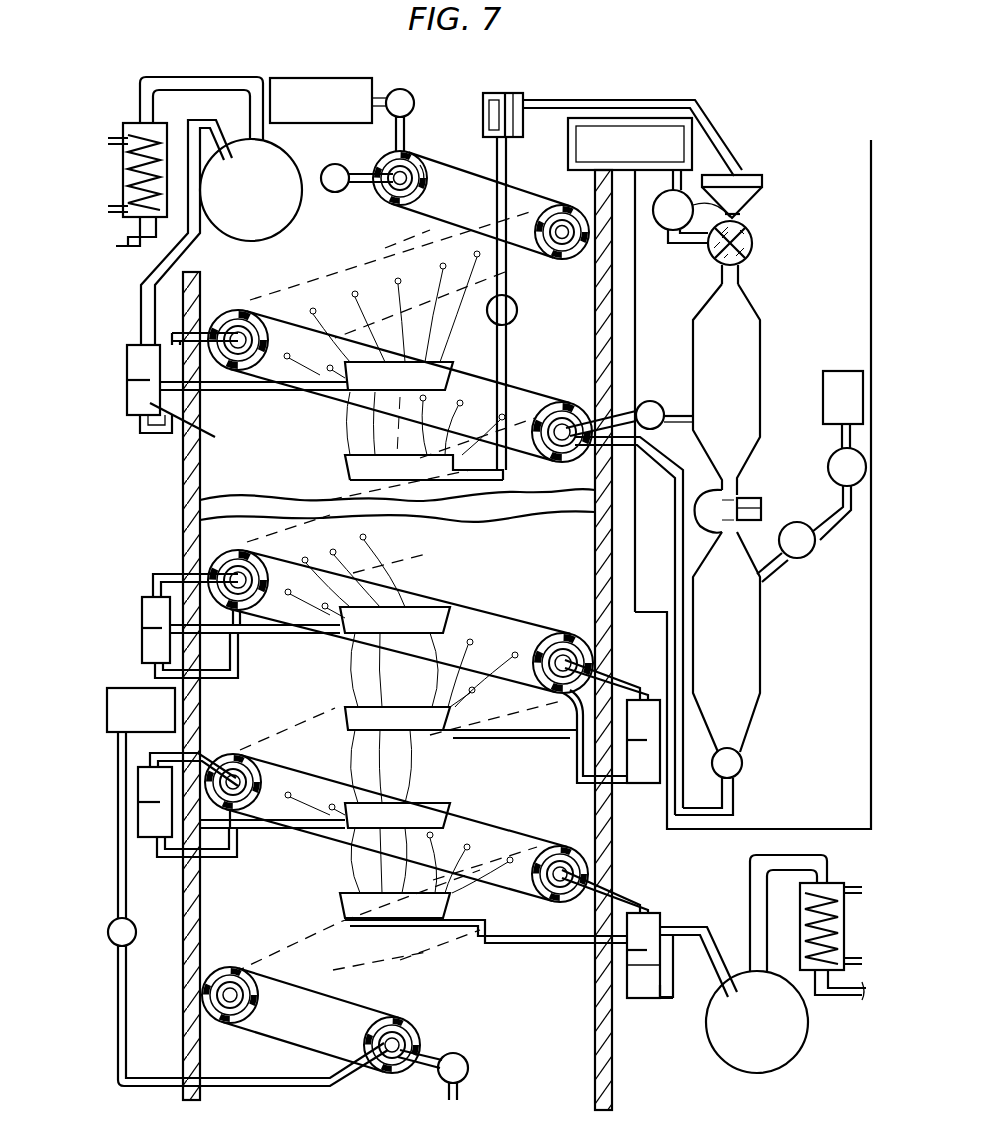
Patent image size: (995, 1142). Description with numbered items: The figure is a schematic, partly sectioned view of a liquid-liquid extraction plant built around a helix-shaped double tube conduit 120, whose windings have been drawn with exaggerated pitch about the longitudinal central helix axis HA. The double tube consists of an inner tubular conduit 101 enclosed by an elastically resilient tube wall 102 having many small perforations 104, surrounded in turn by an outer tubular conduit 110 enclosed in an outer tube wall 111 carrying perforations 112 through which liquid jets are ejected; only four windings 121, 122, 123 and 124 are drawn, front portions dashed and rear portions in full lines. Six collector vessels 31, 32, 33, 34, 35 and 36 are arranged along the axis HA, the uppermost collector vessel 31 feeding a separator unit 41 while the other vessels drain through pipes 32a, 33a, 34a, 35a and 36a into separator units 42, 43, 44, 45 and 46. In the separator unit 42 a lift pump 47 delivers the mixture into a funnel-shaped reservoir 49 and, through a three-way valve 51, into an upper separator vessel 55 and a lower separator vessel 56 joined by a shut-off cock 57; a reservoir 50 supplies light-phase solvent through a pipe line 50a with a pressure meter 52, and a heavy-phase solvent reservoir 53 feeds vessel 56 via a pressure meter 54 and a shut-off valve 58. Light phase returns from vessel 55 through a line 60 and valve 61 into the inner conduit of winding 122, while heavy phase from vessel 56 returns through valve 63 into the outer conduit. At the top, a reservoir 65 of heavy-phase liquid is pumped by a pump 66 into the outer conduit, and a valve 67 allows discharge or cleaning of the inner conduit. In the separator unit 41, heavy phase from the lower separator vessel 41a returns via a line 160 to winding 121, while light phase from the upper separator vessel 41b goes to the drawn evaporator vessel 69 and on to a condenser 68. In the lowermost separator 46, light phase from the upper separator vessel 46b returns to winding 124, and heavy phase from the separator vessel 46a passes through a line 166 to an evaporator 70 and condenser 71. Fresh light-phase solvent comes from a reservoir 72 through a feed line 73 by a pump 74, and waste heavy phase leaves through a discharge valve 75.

The uppermost collector vessel 31 is at (397, 387).
The collector vessel 32 is at (397, 478).
The pipe 32a is at (503, 480).
The collector vessel 33 is at (397, 630).
The pipe 33a is at (275, 640).
The collector vessel 34 is at (397, 730).
The pipe 34a is at (528, 745).
The collector vessel 35 is at (397, 826).
The pipe 35a is at (283, 830).
The lowermost collector vessel 36 is at (397, 917).
The pipe 36a is at (490, 936).
The separator unit 41 is at (129, 427).
The lower separator vessel 41a is at (203, 427).
The upper separator vessel 41b is at (138, 332).
The separator unit 42 is at (804, 288).
The separator unit 43 is at (133, 589).
The separator unit 44 is at (655, 786).
The separator unit 45 is at (140, 860).
The separator unit 46 is at (653, 921).
The separator vessel 46a is at (663, 930).
The upper separator vessel 46b is at (627, 965).
The lift pump 47 is at (478, 110).
The funnel-shaped reservoir 49 is at (749, 201).
The reservoir for light-phase solvent 50 is at (626, 160).
The pipe line 50a is at (700, 250).
The three-way valve 51 is at (751, 253).
The pressure meter 52 is at (741, 215).
The heavy-phase solvent reservoir 53 is at (857, 406).
The pressure meter 54 is at (828, 472).
The upper separator vessel 55 is at (735, 418).
The lower separator vessel 56 is at (740, 682).
The shut-off cock 57 is at (763, 508).
The shut-off valve 58 is at (812, 550).
The line 60 is at (605, 415).
The valve 61 is at (652, 403).
The valve 63 is at (742, 775).
The reservoir of heavy-phase liquid 65 is at (318, 112).
The pump 66 is at (411, 97).
The valve 67 is at (322, 182).
The condenser 68 is at (104, 200).
The tank 69 is at (249, 200).
The evaporator 70 is at (766, 964).
The condenser 71 is at (845, 915).
The reservoir 72 is at (146, 722).
The feed line 73 is at (156, 1078).
The pump 74 is at (132, 948).
The discharge valve 75 is at (470, 1076).
The inner tubular conduit 101 is at (418, 1030).
The tube wall 102 is at (422, 190).
The perforations 104 is at (560, 258).
The outer tubular conduit 110 is at (382, 196).
The outer tube wall 111 is at (405, 236).
The perforations 112 is at (518, 230).
The helix-shaped double tube conduit 120 is at (385, 151).
The first winding 121 is at (468, 158).
The winding 122 is at (331, 470).
The winding 123 is at (462, 593).
The winding 124 is at (475, 822).
The line 160 is at (170, 450).
The line 166 is at (668, 998).
The longitudinal central helix axis HA is at (350, 1020).